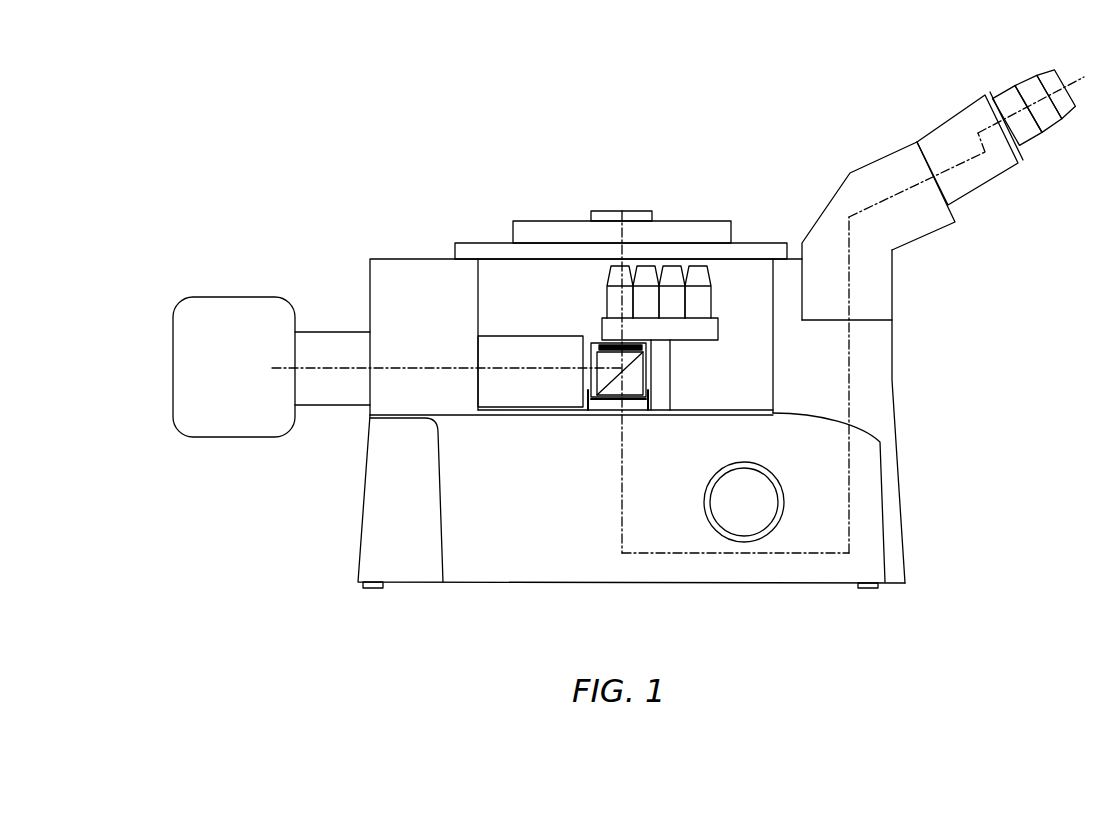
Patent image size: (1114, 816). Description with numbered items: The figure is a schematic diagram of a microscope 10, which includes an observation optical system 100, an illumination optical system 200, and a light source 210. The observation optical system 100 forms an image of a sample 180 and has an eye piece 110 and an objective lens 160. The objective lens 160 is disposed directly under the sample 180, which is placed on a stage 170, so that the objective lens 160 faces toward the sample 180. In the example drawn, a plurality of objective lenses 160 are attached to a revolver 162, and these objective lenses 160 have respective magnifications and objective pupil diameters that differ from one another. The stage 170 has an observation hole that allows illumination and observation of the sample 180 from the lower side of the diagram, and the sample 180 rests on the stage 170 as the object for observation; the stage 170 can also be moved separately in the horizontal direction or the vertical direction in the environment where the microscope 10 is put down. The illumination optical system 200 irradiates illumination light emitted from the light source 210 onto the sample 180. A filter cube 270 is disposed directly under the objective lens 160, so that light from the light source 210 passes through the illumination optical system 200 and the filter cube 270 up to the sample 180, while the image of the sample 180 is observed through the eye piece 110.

The microscope 10 is at (273, 137).
The observation optical system 100 is at (458, 190).
The eye piece 110 is at (1005, 92).
The objective lens 160 is at (607, 290).
The revolver 162 is at (690, 340).
The stage 170 is at (692, 218).
The sample 180 is at (607, 210).
The illumination optical system 200 is at (328, 286).
The light source 210 is at (225, 442).
The filter cube 270 is at (608, 400).